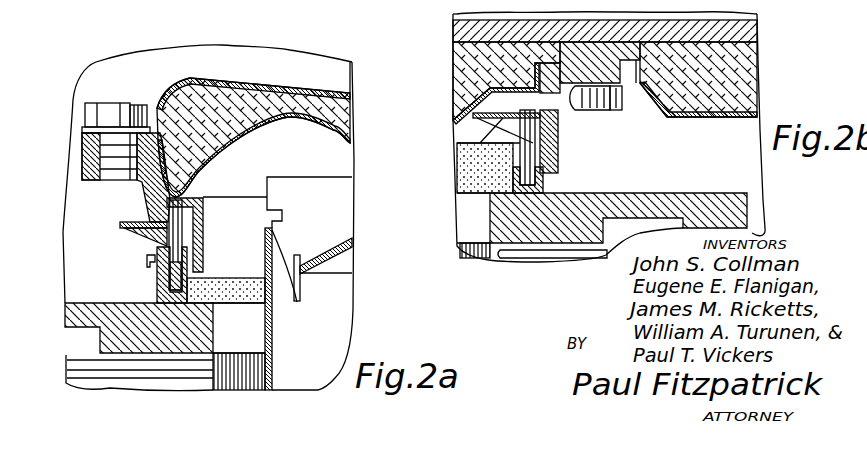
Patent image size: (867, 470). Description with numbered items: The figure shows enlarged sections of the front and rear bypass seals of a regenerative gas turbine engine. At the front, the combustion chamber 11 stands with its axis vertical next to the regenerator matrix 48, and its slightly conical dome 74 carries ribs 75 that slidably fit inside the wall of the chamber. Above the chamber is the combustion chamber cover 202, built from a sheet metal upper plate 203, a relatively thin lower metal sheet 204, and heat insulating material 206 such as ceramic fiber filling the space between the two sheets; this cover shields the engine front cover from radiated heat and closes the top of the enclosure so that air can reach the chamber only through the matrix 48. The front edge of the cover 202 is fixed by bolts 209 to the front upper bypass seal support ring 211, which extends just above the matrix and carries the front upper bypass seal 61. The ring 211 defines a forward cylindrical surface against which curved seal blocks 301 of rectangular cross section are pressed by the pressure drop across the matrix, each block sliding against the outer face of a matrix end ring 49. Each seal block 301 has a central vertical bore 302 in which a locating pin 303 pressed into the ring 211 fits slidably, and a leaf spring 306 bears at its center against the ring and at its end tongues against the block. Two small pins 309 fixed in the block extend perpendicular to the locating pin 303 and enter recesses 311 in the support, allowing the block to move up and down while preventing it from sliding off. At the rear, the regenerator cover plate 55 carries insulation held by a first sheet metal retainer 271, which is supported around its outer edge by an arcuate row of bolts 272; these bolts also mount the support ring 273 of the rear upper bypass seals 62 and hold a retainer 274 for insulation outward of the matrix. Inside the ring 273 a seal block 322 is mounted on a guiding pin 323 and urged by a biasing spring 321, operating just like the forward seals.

In FIG. 2a, the combustion chamber 11 is at (330, 297).
In FIG. 2a, the regenerator matrix 48 is at (108, 382).
In FIG. 2b, the regenerator matrix 48 is at (552, 257).
In FIG. 2a, the matrix end rings 49 is at (193, 342).
In FIG. 2b, the matrix end rings 49 is at (747, 209).
In FIG. 2b, the regenerator cover plate 55 is at (740, 18).
In FIG. 2a, the front upper bypass seal 61 is at (88, 258).
In FIG. 2b, the rear upper bypass seals 62 is at (600, 163).
In FIG. 2a, the dome 74 is at (340, 258).
In FIG. 2a, the ribs 75 is at (333, 201).
In FIG. 2a, the combustion chamber cover 202 is at (348, 74).
In FIG. 2a, the upper plate 203 is at (227, 76).
In FIG. 2a, the lower metal sheet 204 is at (344, 141).
In FIG. 2a, the heat insulating material 206 is at (280, 90).
In FIG. 2a, the bolts 209 is at (112, 120).
In FIG. 2a, the front upper bypass seal support ring 211 is at (143, 183).
In FIG. 2b, the first sheet metal retainer 271 is at (475, 101).
In FIG. 2b, the bolts 272 is at (614, 103).
In FIG. 2b, the support ring 273 is at (586, 100).
In FIG. 2b, the retainer 274 is at (697, 118).
In FIG. 2a, the seal block 301 is at (165, 276).
In FIG. 2a, the central vertical bore 302 is at (185, 273).
In FIG. 2a, the locating pin 303 is at (203, 210).
In FIG. 2a, the leaf spring 306 is at (140, 222).
In FIG. 2a, the small pins 309 is at (150, 260).
In FIG. 2a, the recesses 311 is at (186, 233).
In FIG. 2b, the biasing spring 321 is at (520, 144).
In FIG. 2b, the seal block 322 is at (540, 188).
In FIG. 2b, the guiding pin 323 is at (540, 146).